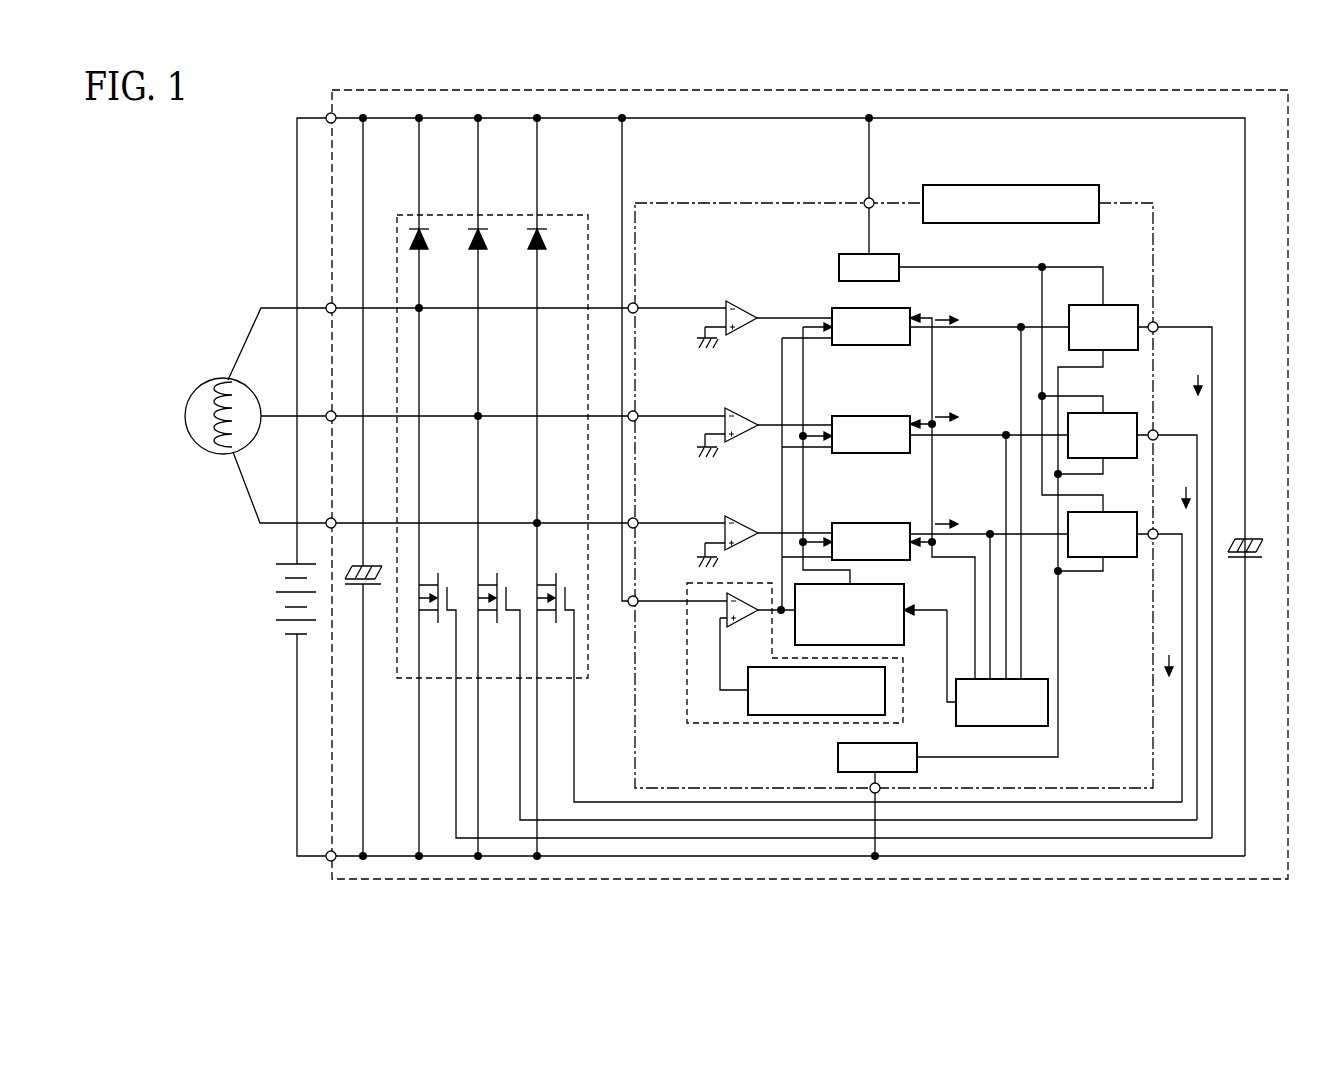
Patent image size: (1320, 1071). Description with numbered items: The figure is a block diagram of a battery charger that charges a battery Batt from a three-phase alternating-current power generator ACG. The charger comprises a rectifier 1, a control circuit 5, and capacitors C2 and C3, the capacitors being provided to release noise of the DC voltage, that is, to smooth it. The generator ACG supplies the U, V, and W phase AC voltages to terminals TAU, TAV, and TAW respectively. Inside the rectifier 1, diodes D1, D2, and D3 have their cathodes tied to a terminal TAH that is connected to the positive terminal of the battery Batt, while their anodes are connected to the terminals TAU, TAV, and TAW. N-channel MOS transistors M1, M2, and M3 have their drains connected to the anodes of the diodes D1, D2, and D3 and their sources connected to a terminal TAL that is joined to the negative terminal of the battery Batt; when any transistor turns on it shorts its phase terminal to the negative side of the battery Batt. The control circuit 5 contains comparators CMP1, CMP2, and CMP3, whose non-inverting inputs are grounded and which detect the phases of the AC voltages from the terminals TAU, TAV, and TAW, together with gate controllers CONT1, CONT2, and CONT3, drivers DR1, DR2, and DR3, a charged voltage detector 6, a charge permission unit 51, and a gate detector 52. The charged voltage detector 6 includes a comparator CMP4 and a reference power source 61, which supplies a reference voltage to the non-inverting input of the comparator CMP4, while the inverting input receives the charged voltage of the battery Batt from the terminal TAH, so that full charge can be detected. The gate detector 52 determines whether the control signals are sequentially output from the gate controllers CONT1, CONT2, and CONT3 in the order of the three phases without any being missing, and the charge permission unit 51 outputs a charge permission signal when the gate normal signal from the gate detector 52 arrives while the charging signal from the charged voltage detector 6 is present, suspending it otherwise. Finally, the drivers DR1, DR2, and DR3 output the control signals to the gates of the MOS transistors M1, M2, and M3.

The rectifier 1 is at (563, 214).
The control circuit 5 is at (1124, 203).
The charged voltage detector 6 is at (737, 726).
The charge permission unit 51 is at (906, 595).
The gate detector 52 is at (983, 727).
The reference power source 61 is at (842, 716).
The diode D1 is at (426, 238).
The diode D2 is at (485, 238).
The diode D3 is at (544, 238).
The MOS transistor M1 is at (428, 615).
The MOS transistor M2 is at (487, 615).
The MOS transistor M3 is at (546, 615).
The capacitor C2 is at (1258, 560).
The capacitor C3 is at (372, 587).
The comparator CMP1 is at (742, 326).
The comparator CMP2 is at (758, 401).
The comparator CMP3 is at (758, 509).
The comparator CMP4 is at (747, 620).
The gate controller CONT1 is at (845, 345).
The gate controller CONT2 is at (845, 453).
The gate controller CONT3 is at (845, 523).
The driver DR1 is at (1118, 351).
The driver DR2 is at (1118, 459).
The driver DR3 is at (1118, 558).
The terminal TAH is at (325, 117).
The terminal TAU is at (326, 307).
The terminal TAV is at (326, 415).
The terminal TAW is at (326, 522).
The terminal TAL is at (326, 855).
The three-phase alternating-current power generator ACG is at (223, 389).
The battery Batt is at (274, 599).